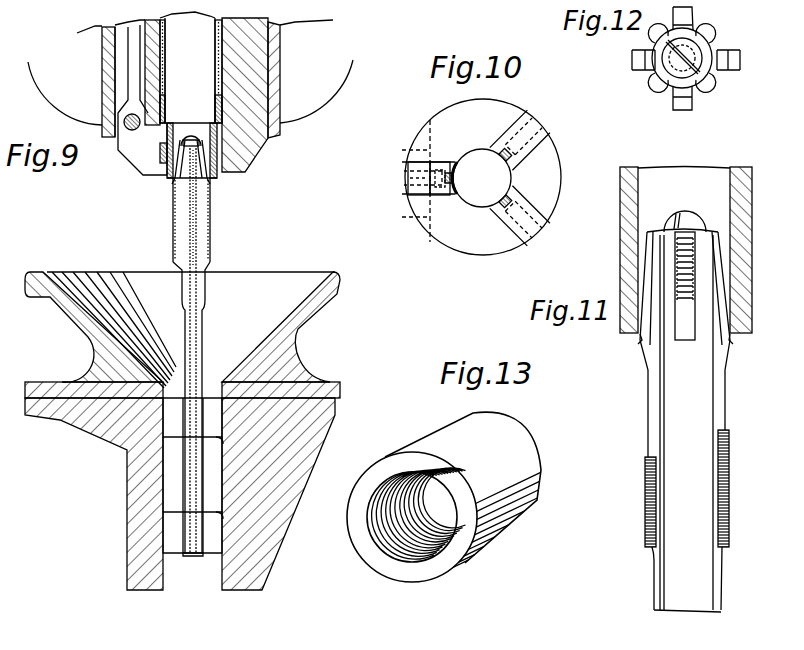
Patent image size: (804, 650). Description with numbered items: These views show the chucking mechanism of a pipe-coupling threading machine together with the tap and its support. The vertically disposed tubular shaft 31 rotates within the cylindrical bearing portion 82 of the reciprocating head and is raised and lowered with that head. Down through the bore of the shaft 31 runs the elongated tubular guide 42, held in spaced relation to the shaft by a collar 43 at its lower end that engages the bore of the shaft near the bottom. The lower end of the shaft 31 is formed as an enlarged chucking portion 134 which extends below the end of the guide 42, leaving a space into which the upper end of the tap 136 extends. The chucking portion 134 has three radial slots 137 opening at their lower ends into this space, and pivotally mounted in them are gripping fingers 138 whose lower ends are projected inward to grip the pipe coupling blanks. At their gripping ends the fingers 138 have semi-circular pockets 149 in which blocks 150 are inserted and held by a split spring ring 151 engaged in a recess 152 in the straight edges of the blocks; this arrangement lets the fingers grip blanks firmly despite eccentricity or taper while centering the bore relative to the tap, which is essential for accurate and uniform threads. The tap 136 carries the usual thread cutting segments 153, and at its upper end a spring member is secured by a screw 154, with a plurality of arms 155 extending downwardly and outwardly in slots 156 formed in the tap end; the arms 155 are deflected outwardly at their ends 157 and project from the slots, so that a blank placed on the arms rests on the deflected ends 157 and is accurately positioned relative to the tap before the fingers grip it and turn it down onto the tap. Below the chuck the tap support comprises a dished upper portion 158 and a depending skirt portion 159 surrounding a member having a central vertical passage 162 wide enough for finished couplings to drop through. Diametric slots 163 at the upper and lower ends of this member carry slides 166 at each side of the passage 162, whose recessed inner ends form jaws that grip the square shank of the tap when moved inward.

In FIG. 9, the tubular shaft 31 is at (152, 32).
In FIG. 9, the tubular guide 42 is at (187, 67).
In FIG. 9, the collar 43 is at (166, 106).
In FIG. 9, the cylindrical bearing portion 82 is at (190, 72).
In FIG. 9, the chucking portion 134 is at (258, 82).
In FIG. 10, the chucking portion 134 is at (483, 177).
In FIG. 11, the chucking portion 134 is at (686, 250).
In FIG. 9, the tap 136 is at (206, 244).
In FIG. 12, the tap 136 is at (705, 84).
In FIG. 11, the tap 136 is at (685, 423).
In FIG. 9, the radial slots 137 is at (118, 73).
In FIG. 10, the radial slots 137 is at (420, 160).
In FIG. 9, the gripping fingers 138 is at (132, 145).
In FIG. 10, the gripping fingers 138 is at (440, 206).
In FIG. 9, the semi-circular pockets 149 is at (160, 133).
In FIG. 10, the semi-circular pockets 149 is at (410, 186).
In FIG. 9, the blocks 150 is at (170, 176).
In FIG. 10, the blocks 150 is at (458, 177).
In FIG. 9, the split spring ring 151 is at (160, 150).
In FIG. 10, the split spring ring 151 is at (470, 204).
In FIG. 9, the recess 152 is at (150, 140).
In FIG. 11, the thread cutting segments 153 is at (646, 530).
In FIG. 9, the screw 154 is at (225, 165).
In FIG. 12, the screw 154 is at (703, 49).
In FIG. 11, the screw 154 is at (691, 211).
In FIG. 9, the arms 155 is at (217, 178).
In FIG. 12, the arms 155 is at (648, 72).
In FIG. 11, the arms 155 is at (682, 340).
In FIG. 12, the slots 156 is at (712, 70).
In FIG. 11, the slots 156 is at (702, 268).
In FIG. 9, the deflected ends 157 is at (208, 186).
In FIG. 12, the deflected ends 157 is at (640, 60).
In FIG. 11, the deflected ends 157 is at (640, 338).
In FIG. 9, the dished upper portion 158 is at (182, 330).
In FIG. 9, the skirt portion 159 is at (182, 486).
In FIG. 9, the central vertical passage 162 is at (194, 567).
In FIG. 9, the diametric slots 163 is at (224, 440).
In FIG. 13, the diametric slots 163 is at (444, 497).
In FIG. 9, the slides 166 is at (172, 423).